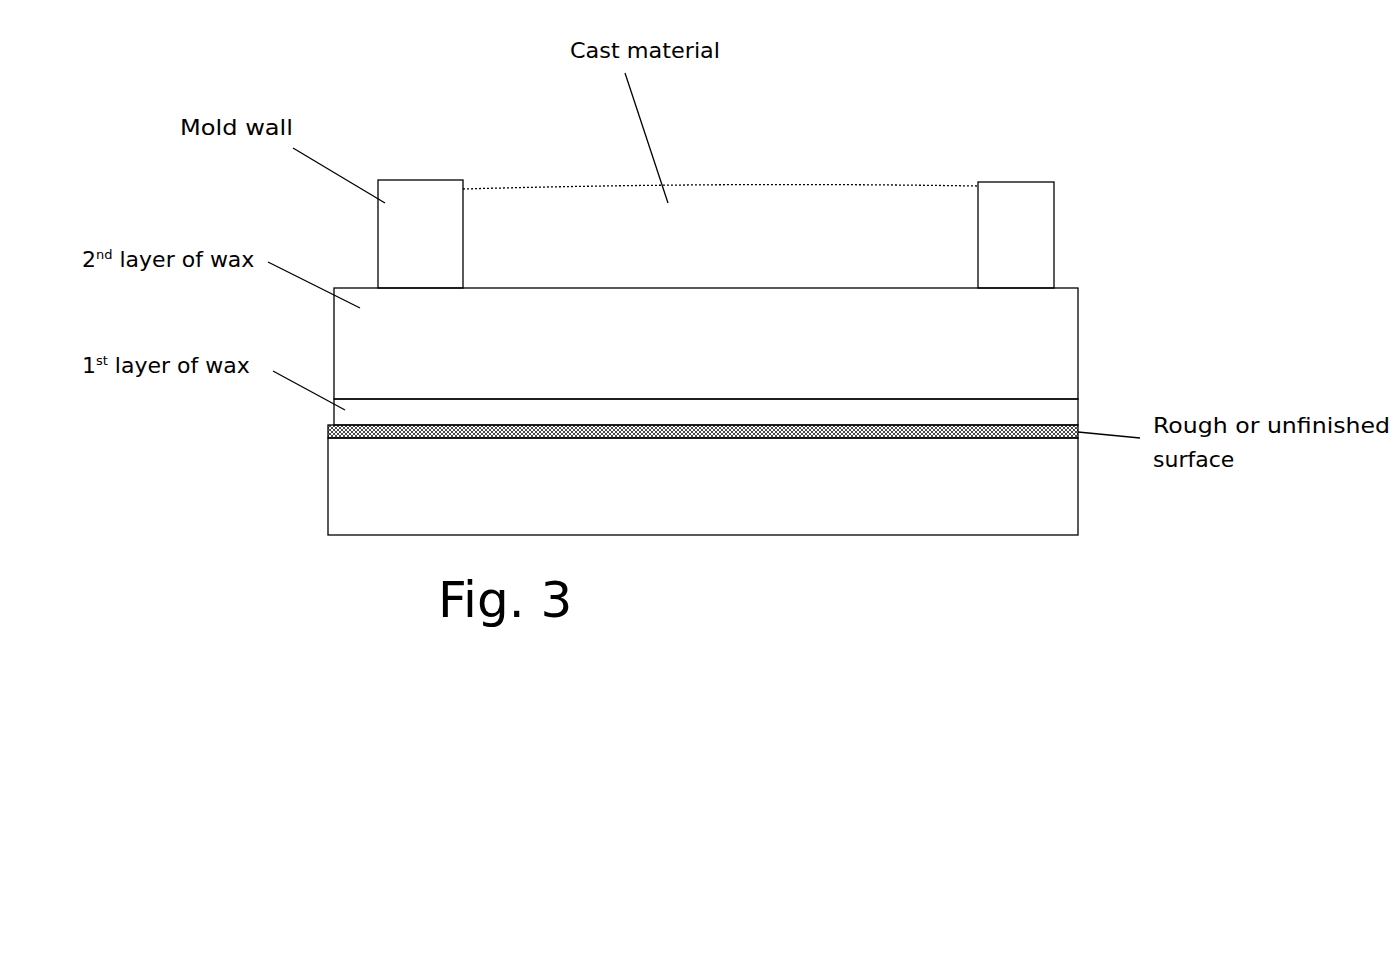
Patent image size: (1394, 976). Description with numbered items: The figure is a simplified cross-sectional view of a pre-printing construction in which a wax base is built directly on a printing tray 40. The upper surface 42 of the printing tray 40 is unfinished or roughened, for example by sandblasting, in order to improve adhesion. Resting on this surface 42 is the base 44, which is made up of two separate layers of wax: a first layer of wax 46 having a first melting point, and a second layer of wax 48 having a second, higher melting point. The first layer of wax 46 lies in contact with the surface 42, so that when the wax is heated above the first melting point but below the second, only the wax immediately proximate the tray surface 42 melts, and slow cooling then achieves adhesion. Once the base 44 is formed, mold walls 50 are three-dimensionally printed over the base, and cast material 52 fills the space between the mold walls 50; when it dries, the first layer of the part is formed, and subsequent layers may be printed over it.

The printing tray 40 is at (342, 512).
The upper surface 42 is at (328, 428).
The base 44 is at (786, 319).
The first layer of wax 46 is at (1062, 412).
The second layer of wax 48 is at (1047, 335).
The mold walls 50 is at (422, 205).
The cast material 52 is at (563, 233).